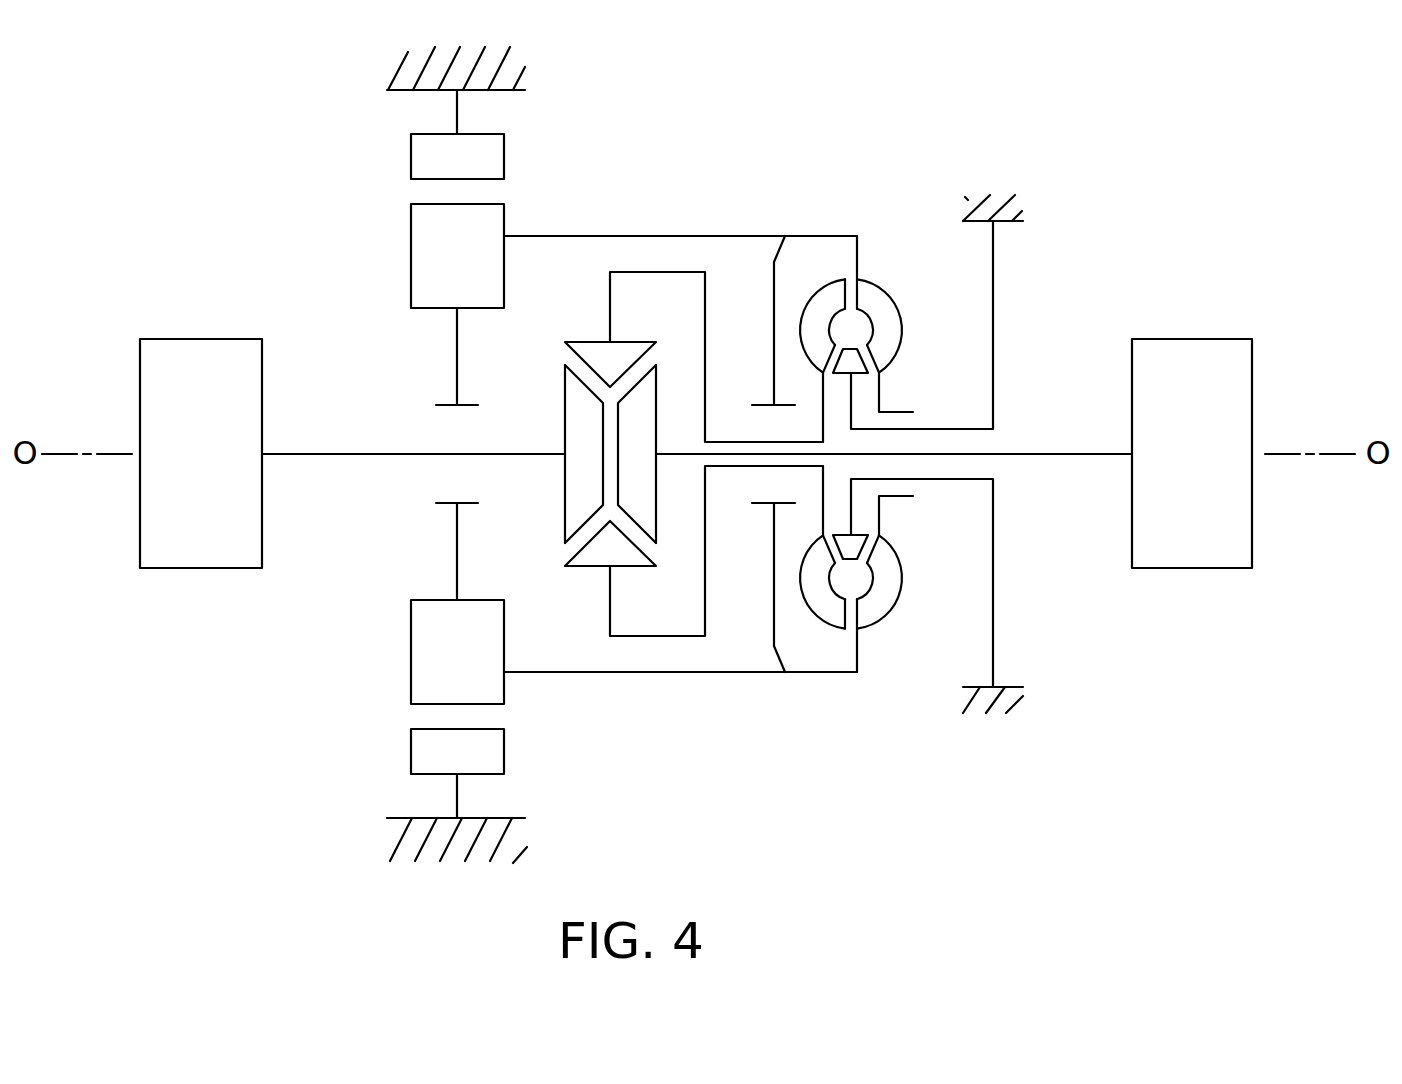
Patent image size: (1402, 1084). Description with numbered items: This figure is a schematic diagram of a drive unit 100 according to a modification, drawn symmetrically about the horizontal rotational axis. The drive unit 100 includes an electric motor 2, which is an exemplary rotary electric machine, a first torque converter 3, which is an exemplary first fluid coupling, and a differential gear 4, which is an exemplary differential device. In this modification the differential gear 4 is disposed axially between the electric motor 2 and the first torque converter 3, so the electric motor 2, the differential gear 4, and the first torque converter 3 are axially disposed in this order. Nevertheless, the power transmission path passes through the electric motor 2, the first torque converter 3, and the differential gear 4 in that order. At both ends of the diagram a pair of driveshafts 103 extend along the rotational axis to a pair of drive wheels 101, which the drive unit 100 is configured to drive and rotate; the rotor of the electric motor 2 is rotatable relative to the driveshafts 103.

The drive unit 100 is at (651, 453).
The electric motor 2 is at (378, 182).
The first torque converter 3 is at (886, 243).
The differential gear 4 is at (583, 310).
The drive wheels 101 is at (211, 568).
The driveshafts 103 is at (397, 455).